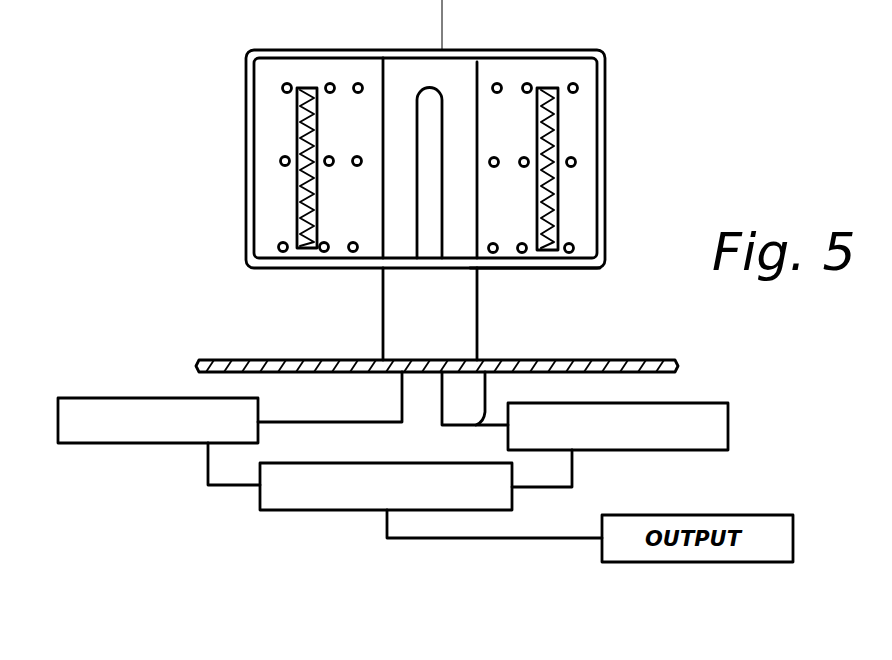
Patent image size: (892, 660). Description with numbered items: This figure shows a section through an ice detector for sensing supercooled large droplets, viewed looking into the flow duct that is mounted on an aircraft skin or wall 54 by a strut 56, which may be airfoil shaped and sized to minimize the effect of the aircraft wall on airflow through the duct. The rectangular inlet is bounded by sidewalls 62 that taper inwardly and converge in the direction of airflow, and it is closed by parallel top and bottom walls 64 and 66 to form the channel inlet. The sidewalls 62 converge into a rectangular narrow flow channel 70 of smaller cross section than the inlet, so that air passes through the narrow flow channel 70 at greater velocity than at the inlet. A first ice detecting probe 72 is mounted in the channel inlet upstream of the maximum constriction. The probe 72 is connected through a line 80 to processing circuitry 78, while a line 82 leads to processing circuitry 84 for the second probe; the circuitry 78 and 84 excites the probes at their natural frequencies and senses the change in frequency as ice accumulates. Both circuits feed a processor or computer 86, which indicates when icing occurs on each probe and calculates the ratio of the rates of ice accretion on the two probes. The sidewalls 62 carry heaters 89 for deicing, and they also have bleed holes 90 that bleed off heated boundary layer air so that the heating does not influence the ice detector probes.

The aircraft skin or wall 54 is at (626, 361).
The strut 56 is at (392, 308).
The sidewalls 62 is at (270, 218).
The top wall 64 is at (328, 50).
The bottom wall 66 is at (545, 268).
The narrow flow channel 70 is at (402, 78).
The first ice detecting probe 72 is at (454, 110).
The processing circuitry 78 is at (112, 398).
The line 80 is at (346, 418).
The line 82 is at (488, 372).
The processing circuitry 84 is at (692, 403).
The processor or computer 86 is at (262, 492).
The heaters 89 is at (297, 176).
The bleed holes 90 is at (281, 157).